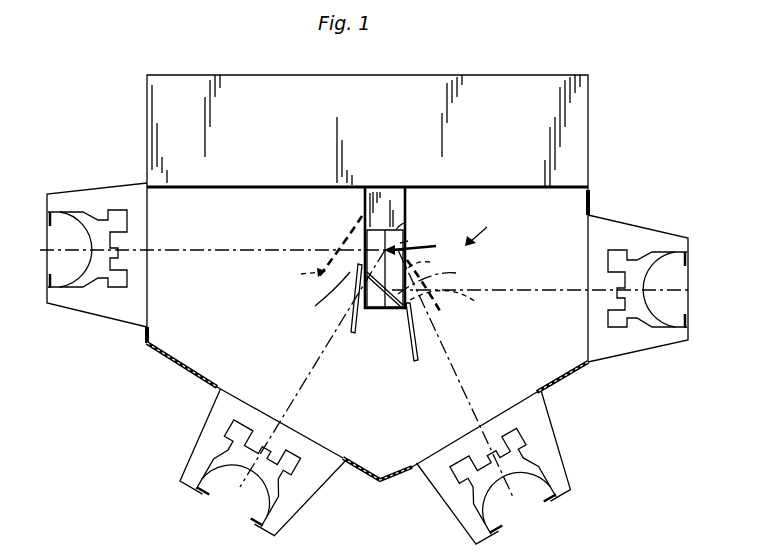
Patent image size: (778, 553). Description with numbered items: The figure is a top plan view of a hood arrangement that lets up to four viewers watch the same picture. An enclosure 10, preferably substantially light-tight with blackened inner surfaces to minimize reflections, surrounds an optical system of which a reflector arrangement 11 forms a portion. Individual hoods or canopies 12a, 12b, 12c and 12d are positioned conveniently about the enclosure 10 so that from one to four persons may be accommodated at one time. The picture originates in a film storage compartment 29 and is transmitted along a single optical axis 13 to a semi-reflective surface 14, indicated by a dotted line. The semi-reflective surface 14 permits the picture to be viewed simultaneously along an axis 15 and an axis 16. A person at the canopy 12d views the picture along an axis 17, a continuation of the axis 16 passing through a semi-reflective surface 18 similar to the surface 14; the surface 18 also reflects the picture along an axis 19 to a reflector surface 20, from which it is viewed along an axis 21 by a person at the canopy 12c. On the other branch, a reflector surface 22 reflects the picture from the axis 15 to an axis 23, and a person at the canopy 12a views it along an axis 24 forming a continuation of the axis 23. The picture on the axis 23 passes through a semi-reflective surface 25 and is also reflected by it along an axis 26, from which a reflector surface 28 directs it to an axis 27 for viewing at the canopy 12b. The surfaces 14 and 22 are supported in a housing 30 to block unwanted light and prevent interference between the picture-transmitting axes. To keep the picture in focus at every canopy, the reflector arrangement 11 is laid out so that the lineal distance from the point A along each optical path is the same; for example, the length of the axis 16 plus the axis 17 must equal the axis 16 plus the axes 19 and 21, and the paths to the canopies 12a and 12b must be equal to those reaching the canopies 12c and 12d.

The enclosure 10 is at (562, 385).
The reflector arrangement 11 is at (484, 230).
The canopy 12a is at (640, 232).
The canopy 12b is at (551, 445).
The canopy 12c is at (307, 495).
The canopy 12d is at (100, 312).
The optical axis 13 is at (404, 223).
The semi-reflective surface 14 is at (408, 241).
The axis 15 is at (431, 261).
The axis 16 is at (360, 214).
The axis 17 is at (222, 250).
The semi-reflective surface 18 is at (303, 274).
The axis 19 is at (323, 295).
The reflector surface 20 is at (356, 333).
The axis 21 is at (293, 402).
The reflector surface 22 is at (384, 307).
The axis 23 is at (440, 276).
The axis 24 is at (526, 290).
The semi-reflective surface 25 is at (455, 304).
The axis 26 is at (433, 315).
The axis 27 is at (450, 384).
The reflector surface 28 is at (408, 357).
The film storage compartment 29 is at (401, 144).
The housing 30 is at (400, 188).
The point A is at (418, 243).